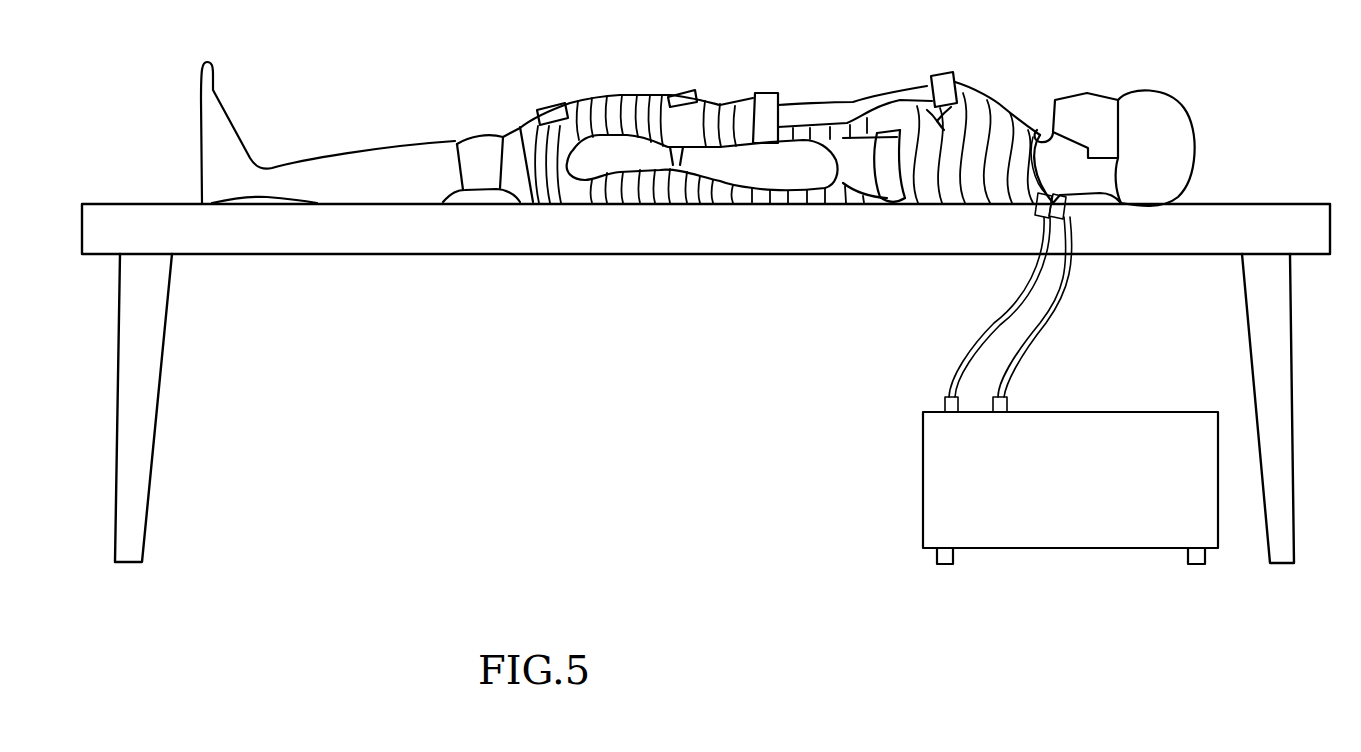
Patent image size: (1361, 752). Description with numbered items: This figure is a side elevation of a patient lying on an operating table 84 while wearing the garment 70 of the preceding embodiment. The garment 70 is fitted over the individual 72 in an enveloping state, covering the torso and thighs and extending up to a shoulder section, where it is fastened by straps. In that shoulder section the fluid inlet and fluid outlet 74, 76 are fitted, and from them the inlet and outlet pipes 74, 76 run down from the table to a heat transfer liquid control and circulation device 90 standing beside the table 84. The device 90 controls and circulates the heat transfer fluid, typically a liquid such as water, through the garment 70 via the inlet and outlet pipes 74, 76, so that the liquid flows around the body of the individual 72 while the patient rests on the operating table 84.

The garment 70 is at (622, 113).
The individual 72 is at (1090, 110).
The fluid inlet 74 is at (1030, 345).
The fluid outlet 76 is at (975, 345).
The operating table 84 is at (1243, 204).
The heat transfer liquid control and circulation device 90 is at (943, 463).